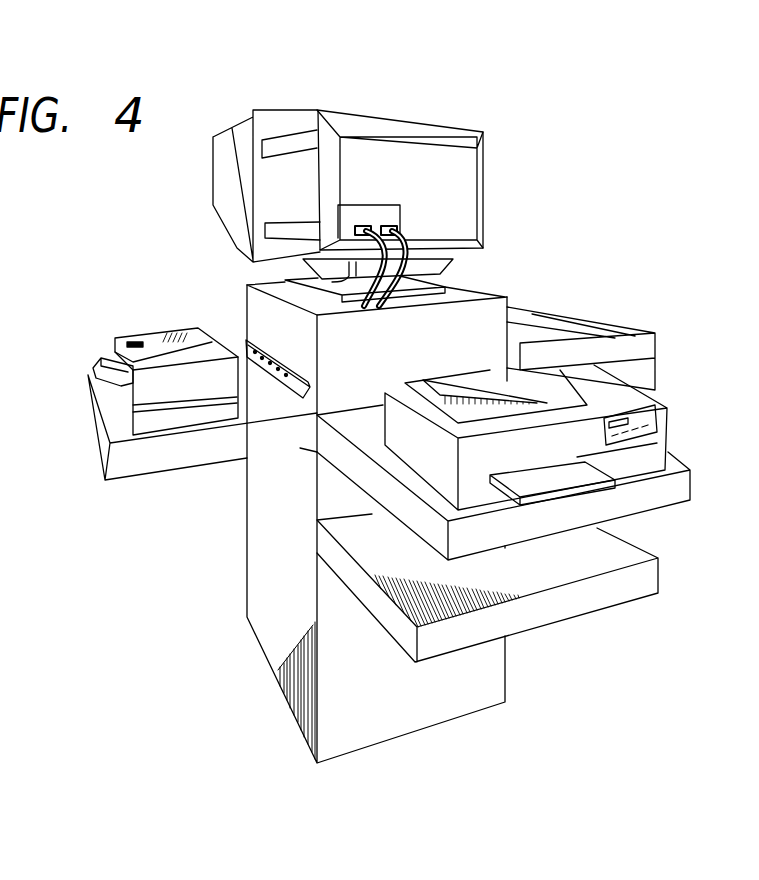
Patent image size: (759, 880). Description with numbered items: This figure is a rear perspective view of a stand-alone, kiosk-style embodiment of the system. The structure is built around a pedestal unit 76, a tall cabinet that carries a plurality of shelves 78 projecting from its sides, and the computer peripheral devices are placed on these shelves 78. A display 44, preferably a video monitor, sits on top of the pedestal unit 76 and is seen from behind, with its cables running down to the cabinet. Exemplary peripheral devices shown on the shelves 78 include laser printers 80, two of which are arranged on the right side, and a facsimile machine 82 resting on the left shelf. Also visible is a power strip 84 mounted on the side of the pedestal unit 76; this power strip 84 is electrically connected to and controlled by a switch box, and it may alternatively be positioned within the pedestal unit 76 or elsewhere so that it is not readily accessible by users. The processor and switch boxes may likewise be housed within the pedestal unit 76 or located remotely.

The display 44 is at (415, 92).
The pedestal unit 76 is at (232, 535).
The shelves 78 is at (1, 360).
The laser printers 80 is at (648, 335).
The facsimile machine 82 is at (150, 333).
The power strip 84 is at (265, 349).